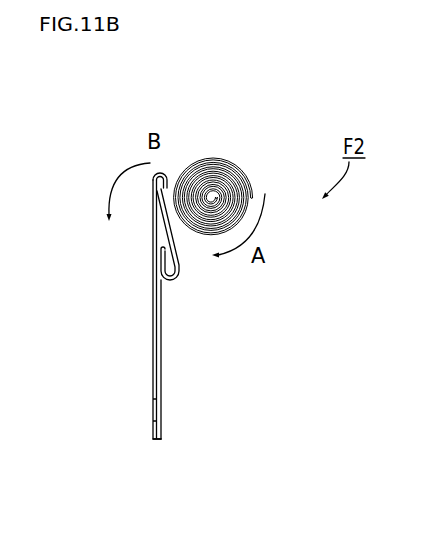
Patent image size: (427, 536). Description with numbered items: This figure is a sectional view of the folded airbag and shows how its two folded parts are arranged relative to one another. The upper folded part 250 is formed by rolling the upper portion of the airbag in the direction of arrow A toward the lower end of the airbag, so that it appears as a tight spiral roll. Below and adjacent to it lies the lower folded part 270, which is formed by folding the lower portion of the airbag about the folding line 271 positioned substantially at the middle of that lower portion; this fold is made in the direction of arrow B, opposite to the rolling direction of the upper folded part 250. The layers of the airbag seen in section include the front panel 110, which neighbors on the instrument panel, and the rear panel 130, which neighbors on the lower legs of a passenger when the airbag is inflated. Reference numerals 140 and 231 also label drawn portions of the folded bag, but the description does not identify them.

The front panel 110 is at (150, 355).
The rear panel 130 is at (158, 337).
The end portion 140 is at (156, 440).
The bent hook portion 231 is at (177, 274).
The upper folded part 250 is at (236, 158).
The lower folded part 270 is at (121, 264).
The folding line 271 is at (162, 170).